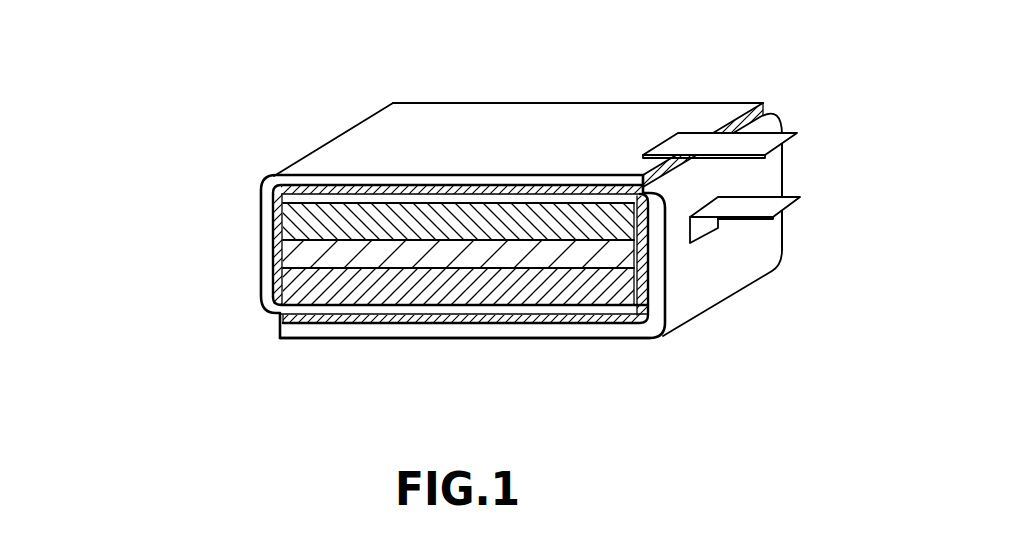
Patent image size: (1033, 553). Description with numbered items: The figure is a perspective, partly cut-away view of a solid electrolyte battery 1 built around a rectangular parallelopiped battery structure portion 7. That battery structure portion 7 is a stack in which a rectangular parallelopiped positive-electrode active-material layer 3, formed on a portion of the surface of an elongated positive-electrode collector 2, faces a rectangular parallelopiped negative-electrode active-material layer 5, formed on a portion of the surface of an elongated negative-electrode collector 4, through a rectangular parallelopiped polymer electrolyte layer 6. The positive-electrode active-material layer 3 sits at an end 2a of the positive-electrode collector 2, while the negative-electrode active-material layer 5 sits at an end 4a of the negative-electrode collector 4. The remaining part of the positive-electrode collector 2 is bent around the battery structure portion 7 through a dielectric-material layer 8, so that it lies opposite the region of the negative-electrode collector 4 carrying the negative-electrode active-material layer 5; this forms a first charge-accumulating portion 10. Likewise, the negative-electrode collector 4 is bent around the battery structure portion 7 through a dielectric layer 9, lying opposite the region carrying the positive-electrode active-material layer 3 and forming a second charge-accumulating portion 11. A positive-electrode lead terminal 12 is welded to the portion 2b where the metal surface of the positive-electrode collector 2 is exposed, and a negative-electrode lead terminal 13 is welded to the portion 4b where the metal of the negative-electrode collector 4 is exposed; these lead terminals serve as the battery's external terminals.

The solid electrolyte battery 1 is at (461, 93).
The positive-electrode collector 2 is at (332, 158).
The end of the positive-electrode collector 2a is at (468, 323).
The exposed portion of the positive-electrode collector 2b is at (728, 113).
The positive-electrode active-material layer 3 is at (302, 290).
The negative-electrode collector 4 is at (290, 197).
The end of the negative-electrode collector 4a is at (413, 207).
The exposed portion of the negative-electrode collector 4b is at (763, 252).
The negative-electrode active-material layer 5 is at (300, 225).
The polymer electrolyte layer 6 is at (302, 257).
The battery structure portion 7 is at (375, 254).
The dielectric-material layer 8 is at (296, 186).
The dielectric layer 9 is at (300, 318).
The first charge-accumulating portion 10 is at (392, 200).
The second charge-accumulating portion 11 is at (373, 303).
The positive-electrode lead terminal 12 is at (697, 148).
The negative-electrode lead terminal 13 is at (742, 207).